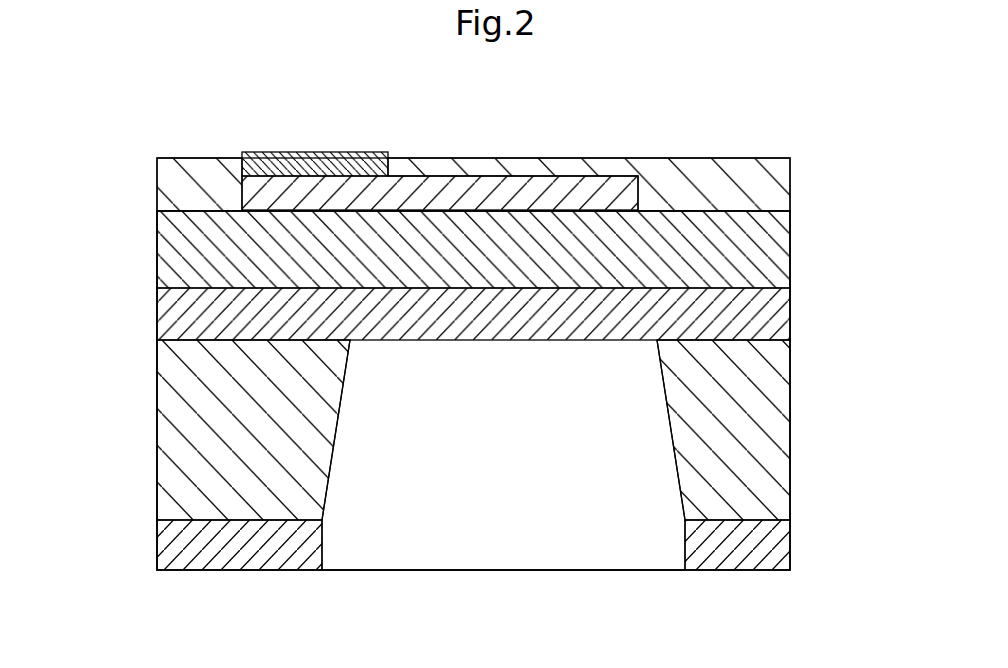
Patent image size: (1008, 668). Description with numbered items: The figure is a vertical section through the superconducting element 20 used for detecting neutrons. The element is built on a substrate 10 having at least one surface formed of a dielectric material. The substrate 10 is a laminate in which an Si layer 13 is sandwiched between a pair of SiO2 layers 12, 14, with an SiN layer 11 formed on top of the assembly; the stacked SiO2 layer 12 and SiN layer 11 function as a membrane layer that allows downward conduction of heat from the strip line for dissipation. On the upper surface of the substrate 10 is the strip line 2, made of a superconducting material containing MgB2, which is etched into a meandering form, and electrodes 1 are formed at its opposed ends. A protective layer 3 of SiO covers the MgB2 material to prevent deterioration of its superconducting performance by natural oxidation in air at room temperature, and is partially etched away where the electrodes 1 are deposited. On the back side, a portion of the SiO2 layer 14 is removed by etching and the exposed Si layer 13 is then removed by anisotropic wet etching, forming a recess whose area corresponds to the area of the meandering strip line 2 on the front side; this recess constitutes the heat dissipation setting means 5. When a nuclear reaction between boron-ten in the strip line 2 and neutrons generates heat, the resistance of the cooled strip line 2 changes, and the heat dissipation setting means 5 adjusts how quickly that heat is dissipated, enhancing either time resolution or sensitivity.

The electrodes 1 is at (313, 152).
The strip line 2 is at (524, 176).
The protective layer 3 is at (157, 181).
The heat dissipation setting means 5 is at (500, 528).
The substrate 10 is at (145, 209).
The SiN layer 11 is at (790, 247).
The SiO2 layer 12 is at (790, 314).
The Si layer 13 is at (790, 385).
The SiO2 layer 14 is at (790, 543).
The superconducting element 20 is at (107, 532).